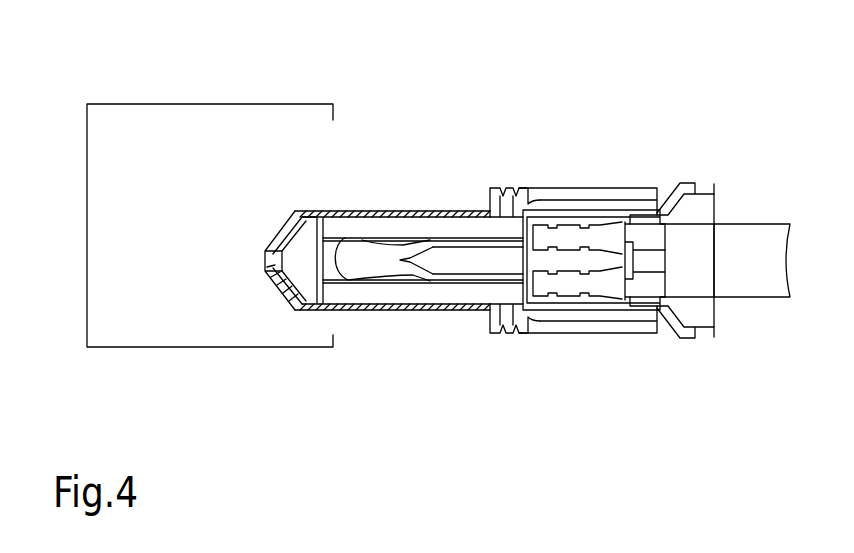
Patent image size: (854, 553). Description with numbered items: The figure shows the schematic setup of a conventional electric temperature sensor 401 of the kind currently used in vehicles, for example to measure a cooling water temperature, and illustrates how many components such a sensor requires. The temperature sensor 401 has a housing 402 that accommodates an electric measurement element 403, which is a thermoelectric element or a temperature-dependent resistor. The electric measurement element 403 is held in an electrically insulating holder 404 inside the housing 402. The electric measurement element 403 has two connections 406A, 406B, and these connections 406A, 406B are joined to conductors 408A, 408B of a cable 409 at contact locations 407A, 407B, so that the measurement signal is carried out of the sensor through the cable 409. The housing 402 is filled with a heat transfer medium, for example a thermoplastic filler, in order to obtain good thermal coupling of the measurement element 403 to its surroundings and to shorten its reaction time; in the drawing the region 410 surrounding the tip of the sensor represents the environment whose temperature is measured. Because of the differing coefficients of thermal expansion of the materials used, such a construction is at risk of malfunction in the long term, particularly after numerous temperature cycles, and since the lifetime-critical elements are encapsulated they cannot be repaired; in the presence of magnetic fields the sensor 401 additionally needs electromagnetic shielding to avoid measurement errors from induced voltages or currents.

The temperature sensor 401 is at (447, 98).
The housing 402 is at (376, 212).
The electric measurement element 403 is at (352, 260).
The electrically insulating holder 404 is at (325, 230).
The connection 406A is at (448, 283).
The connection 406B is at (470, 240).
The contact location 407A is at (560, 286).
The contact location 407B is at (588, 233).
The conductor 408A is at (648, 280).
The conductor 408B is at (640, 233).
The cable 409 is at (732, 235).
The measurement environment 410 is at (197, 245).